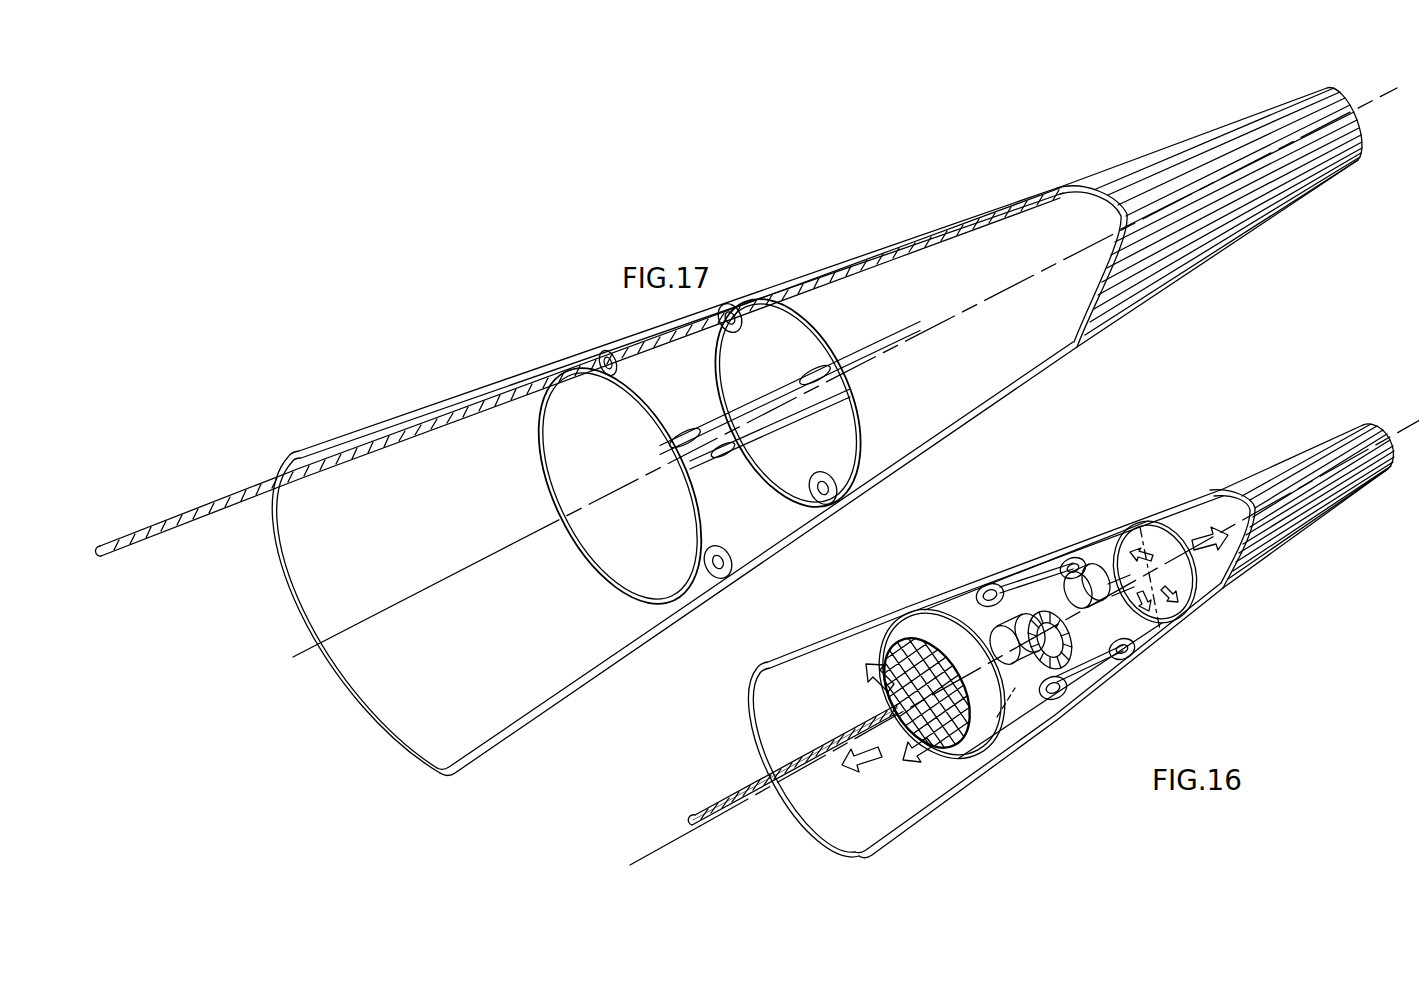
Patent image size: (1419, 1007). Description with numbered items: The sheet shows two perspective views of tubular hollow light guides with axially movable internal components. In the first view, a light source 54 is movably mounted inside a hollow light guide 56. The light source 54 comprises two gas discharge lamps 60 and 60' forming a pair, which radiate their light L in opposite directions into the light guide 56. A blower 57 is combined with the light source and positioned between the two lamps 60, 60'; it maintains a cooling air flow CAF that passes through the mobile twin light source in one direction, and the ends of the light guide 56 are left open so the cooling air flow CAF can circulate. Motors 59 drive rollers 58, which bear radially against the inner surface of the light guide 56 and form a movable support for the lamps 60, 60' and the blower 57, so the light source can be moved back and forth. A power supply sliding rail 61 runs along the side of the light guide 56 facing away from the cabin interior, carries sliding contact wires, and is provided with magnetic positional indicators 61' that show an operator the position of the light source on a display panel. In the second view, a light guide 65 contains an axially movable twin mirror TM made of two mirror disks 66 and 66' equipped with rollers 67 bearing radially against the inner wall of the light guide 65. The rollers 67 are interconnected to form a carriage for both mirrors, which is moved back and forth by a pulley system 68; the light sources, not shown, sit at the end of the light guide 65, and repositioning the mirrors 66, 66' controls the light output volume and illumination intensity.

In FIG. 16, the light source 54 is at (948, 559).
In FIG. 16, the light guide 56 is at (1296, 519).
In FIG. 16, the blower 57 is at (1082, 572).
In FIG. 16, the rollers 58 is at (993, 585).
In FIG. 16, the motors 59 is at (1031, 575).
In FIG. 16, the gas discharge lamp 60 is at (994, 678).
In FIG. 16, the gas discharge lamp 60' is at (1155, 597).
In FIG. 16, the power supply sliding rail 61 is at (794, 791).
In FIG. 16, the magnetic positional indicators 61' is at (785, 764).
In FIG. 17, the light guide 65 is at (612, 661).
In FIG. 17, the mirror disk 66 is at (620, 486).
In FIG. 17, the mirror disk 66' is at (799, 403).
In FIG. 17, the rollers 67 is at (693, 425).
In FIG. 17, the pulley system 68 is at (224, 503).
In FIG. 17, the twin mirror TM is at (528, 478).
In FIG. 16, the cooling air flow CAF is at (866, 682).
In FIG. 16, the light L is at (866, 773).